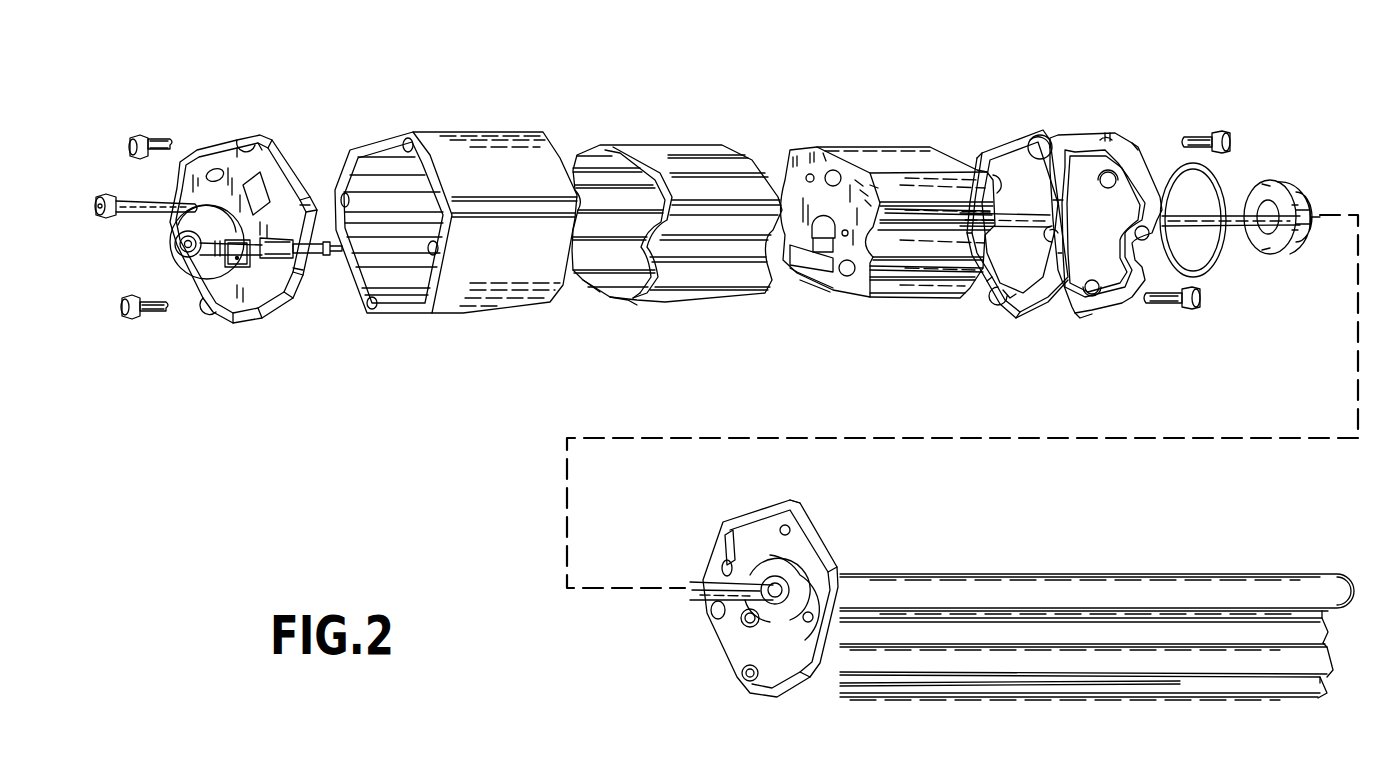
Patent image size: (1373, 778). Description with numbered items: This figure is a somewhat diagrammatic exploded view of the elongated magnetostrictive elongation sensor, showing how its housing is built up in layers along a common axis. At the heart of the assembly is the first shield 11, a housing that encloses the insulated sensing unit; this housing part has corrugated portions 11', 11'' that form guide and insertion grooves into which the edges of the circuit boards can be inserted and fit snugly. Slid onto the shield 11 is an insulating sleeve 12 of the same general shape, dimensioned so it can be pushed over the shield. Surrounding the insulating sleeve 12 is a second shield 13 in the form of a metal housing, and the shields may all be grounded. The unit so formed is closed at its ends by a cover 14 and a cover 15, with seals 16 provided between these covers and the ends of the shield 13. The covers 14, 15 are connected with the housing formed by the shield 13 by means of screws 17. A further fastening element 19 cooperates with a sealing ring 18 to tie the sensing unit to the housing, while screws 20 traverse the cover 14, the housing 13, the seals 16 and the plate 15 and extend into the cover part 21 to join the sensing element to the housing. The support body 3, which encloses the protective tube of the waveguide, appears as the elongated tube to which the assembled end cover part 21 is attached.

The support body 3 is at (1066, 572).
The first shield 11 is at (888, 175).
The corrugated portion 11' is at (926, 322).
The corrugated portion 11'' is at (938, 128).
The insulating sleeve 12 is at (662, 142).
The second shield 13 is at (472, 128).
The cover 14 is at (225, 133).
The cover 15 is at (1103, 128).
The seals 16 is at (293, 146).
The screws 17 is at (131, 137).
The sealing ring 18 is at (1223, 268).
The further fastening element 19 is at (1282, 173).
The screws 20 is at (96, 193).
The cover part 21 is at (828, 530).